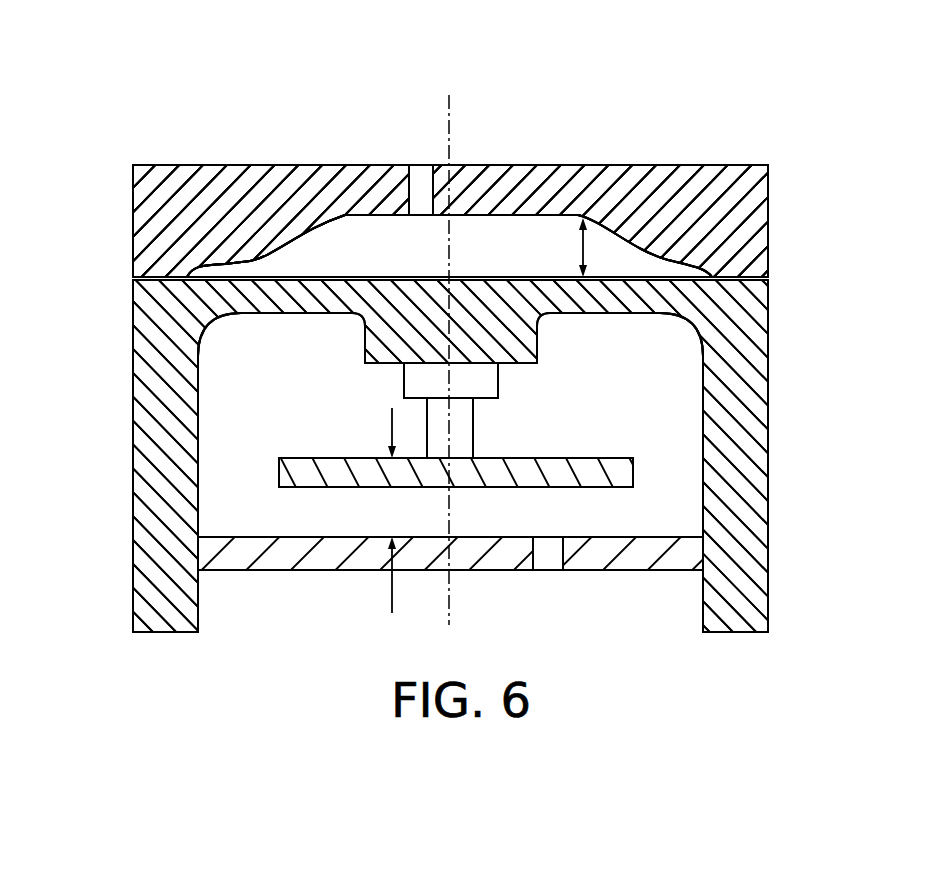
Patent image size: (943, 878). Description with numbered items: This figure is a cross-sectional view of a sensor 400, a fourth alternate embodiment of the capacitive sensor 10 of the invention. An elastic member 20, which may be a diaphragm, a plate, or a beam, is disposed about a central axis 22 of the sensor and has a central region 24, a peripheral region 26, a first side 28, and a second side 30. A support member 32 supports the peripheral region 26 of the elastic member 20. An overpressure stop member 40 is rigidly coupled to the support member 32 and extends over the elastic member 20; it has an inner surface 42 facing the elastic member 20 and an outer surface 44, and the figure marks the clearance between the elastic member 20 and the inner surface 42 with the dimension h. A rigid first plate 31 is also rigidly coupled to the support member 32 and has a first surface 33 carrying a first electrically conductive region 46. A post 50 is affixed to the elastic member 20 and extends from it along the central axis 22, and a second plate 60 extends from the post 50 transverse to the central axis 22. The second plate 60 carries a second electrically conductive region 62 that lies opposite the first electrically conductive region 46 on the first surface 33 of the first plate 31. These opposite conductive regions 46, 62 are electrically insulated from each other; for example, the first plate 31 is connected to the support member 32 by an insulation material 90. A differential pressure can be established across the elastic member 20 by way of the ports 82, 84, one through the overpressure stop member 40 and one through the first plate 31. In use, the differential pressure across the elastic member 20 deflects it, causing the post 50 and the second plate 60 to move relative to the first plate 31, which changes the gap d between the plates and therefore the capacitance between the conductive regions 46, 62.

The sensor 400 is at (693, 46).
The capacitive sensor 10 is at (133, 182).
The central axis 22 is at (452, 109).
The overpressure stop member 40 is at (644, 175).
The outer surface 44 is at (203, 165).
The port 84 is at (421, 172).
The inner surface 42 is at (298, 238).
The second side 30 is at (365, 277).
The cavity height h is at (645, 252).
The peripheral region 26 is at (162, 313).
The support member 32 is at (758, 502).
The first side 28 is at (254, 315).
The central region 24 is at (645, 313).
The elastic member 20 is at (664, 305).
The post 50 is at (475, 425).
The second plate 60 is at (633, 470).
The second electrically conductive region 62 is at (590, 487).
The gap d is at (392, 603).
The first plate 31 is at (228, 557).
The first surface 33 is at (282, 537).
The first electrically conductive region 46 is at (330, 537).
The port 82 is at (548, 555).
The insulation material 90 is at (200, 551).